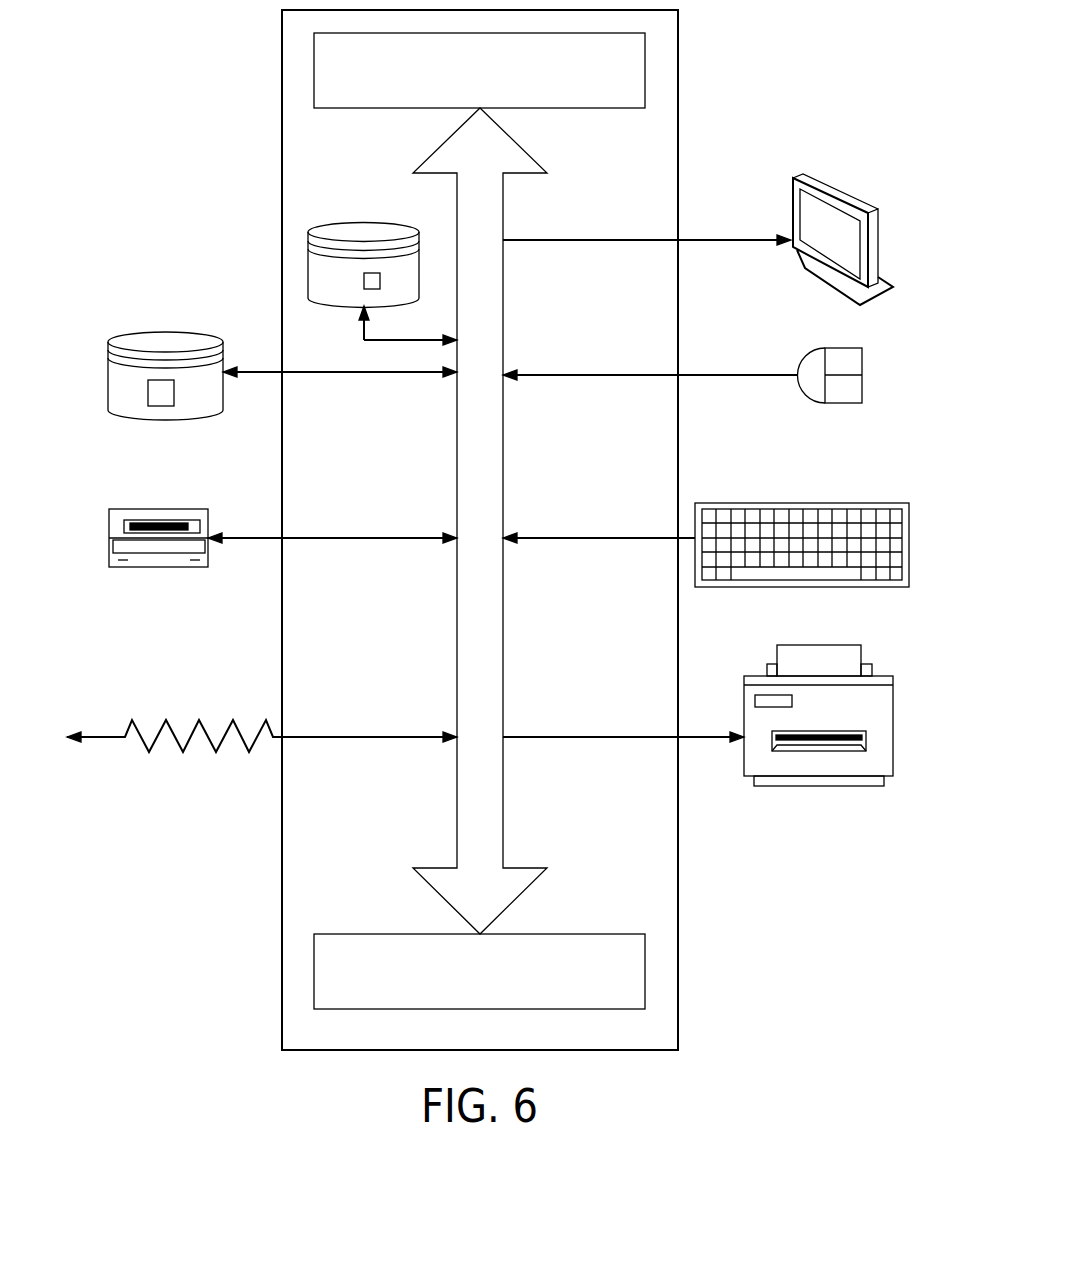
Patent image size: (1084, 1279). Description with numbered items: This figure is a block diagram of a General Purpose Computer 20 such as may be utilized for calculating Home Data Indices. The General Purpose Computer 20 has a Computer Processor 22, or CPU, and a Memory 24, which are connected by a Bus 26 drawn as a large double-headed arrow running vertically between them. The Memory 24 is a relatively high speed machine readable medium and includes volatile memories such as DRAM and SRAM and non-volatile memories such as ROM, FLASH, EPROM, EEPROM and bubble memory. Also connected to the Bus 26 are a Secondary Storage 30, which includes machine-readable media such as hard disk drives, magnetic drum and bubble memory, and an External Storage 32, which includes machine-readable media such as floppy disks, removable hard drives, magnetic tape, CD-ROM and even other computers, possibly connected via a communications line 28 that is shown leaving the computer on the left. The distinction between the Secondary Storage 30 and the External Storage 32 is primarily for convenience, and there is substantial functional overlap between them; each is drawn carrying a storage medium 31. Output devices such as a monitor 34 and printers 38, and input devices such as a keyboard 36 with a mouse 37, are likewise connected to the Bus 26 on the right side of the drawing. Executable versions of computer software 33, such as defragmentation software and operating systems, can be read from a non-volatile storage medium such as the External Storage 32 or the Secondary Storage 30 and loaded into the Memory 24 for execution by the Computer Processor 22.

The General Purpose Computer 20 is at (206, 126).
The Computer Processor 22 is at (560, 108).
The Memory 24 is at (571, 934).
The Bus 26 is at (503, 312).
The communications line 28 is at (180, 752).
The Secondary Storage 30 is at (340, 223).
The storage medium 31 is at (372, 289).
The External Storage 32 is at (165, 330).
The computer software 33 is at (195, 508).
The monitor 34 is at (795, 175).
The keyboard 36 is at (760, 587).
The mouse 37 is at (826, 403).
The printers 38 is at (800, 786).